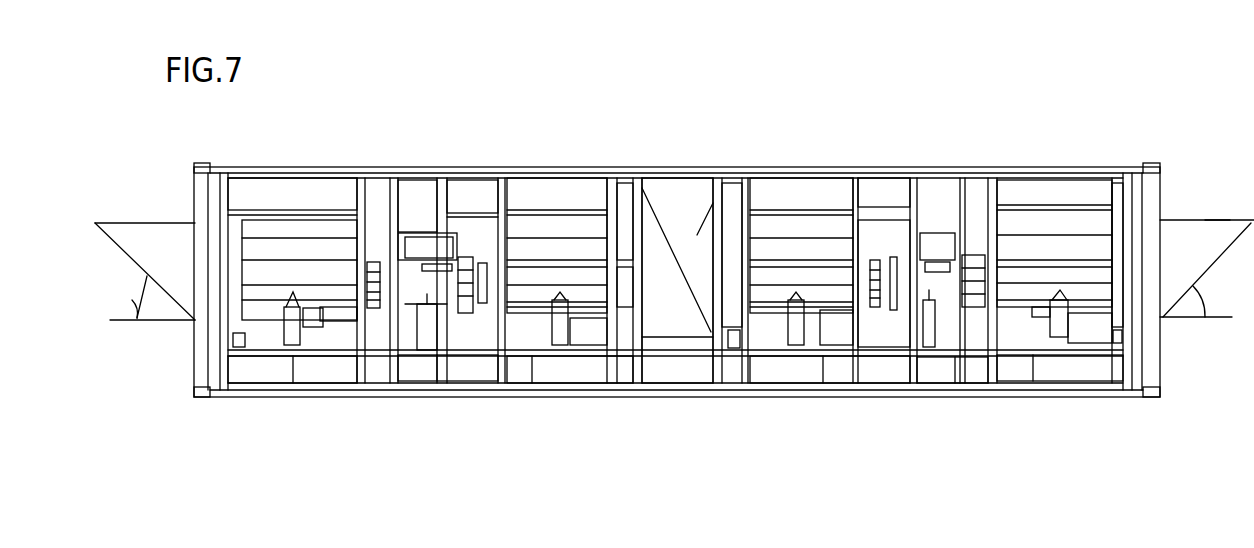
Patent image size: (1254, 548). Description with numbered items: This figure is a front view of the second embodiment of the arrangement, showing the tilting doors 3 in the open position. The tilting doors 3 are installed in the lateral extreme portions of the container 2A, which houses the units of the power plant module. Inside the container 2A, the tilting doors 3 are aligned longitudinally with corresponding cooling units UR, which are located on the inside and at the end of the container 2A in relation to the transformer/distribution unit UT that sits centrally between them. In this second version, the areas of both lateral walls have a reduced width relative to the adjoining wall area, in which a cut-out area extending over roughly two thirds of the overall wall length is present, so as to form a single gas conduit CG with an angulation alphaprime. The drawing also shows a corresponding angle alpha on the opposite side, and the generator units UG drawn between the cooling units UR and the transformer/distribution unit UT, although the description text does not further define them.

The container 2A is at (795, 152).
The cooling unit UR is at (267, 193).
The generator unit UG is at (478, 187).
The transformer/distribution unit UT is at (666, 178).
The tilting door 3 is at (155, 258).
The gas conduit CG is at (1218, 214).
The angle α alpha is at (130, 305).
The angulation alphaprime is at (1209, 298).